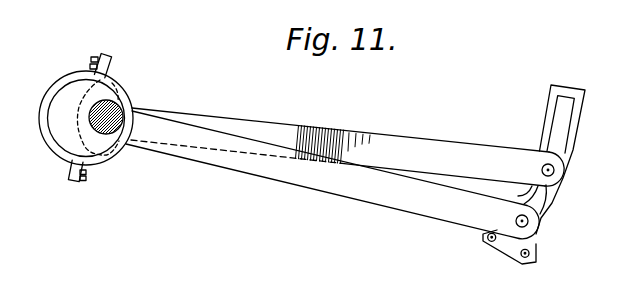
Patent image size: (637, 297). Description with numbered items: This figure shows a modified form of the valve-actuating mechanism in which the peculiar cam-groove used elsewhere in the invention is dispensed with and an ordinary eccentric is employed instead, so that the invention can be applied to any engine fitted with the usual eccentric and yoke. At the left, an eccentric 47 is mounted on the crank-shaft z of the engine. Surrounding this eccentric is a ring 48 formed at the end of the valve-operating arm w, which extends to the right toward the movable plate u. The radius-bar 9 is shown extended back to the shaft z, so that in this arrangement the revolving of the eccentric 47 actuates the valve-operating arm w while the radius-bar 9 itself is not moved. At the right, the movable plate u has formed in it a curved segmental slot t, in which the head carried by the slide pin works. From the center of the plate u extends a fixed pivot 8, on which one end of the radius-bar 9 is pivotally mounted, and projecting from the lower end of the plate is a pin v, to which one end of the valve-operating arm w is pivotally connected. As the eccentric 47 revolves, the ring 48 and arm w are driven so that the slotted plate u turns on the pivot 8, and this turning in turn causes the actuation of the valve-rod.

The ring 48 is at (59, 89).
The eccentric 47 is at (62, 132).
The crank-shaft z is at (116, 110).
The radius-bar 9 is at (405, 141).
The valve-operating arm w is at (380, 199).
The fixed pivot 8 is at (556, 170).
The pin v is at (529, 221).
The curved segmental slot t is at (563, 120).
The movable plate u is at (570, 148).